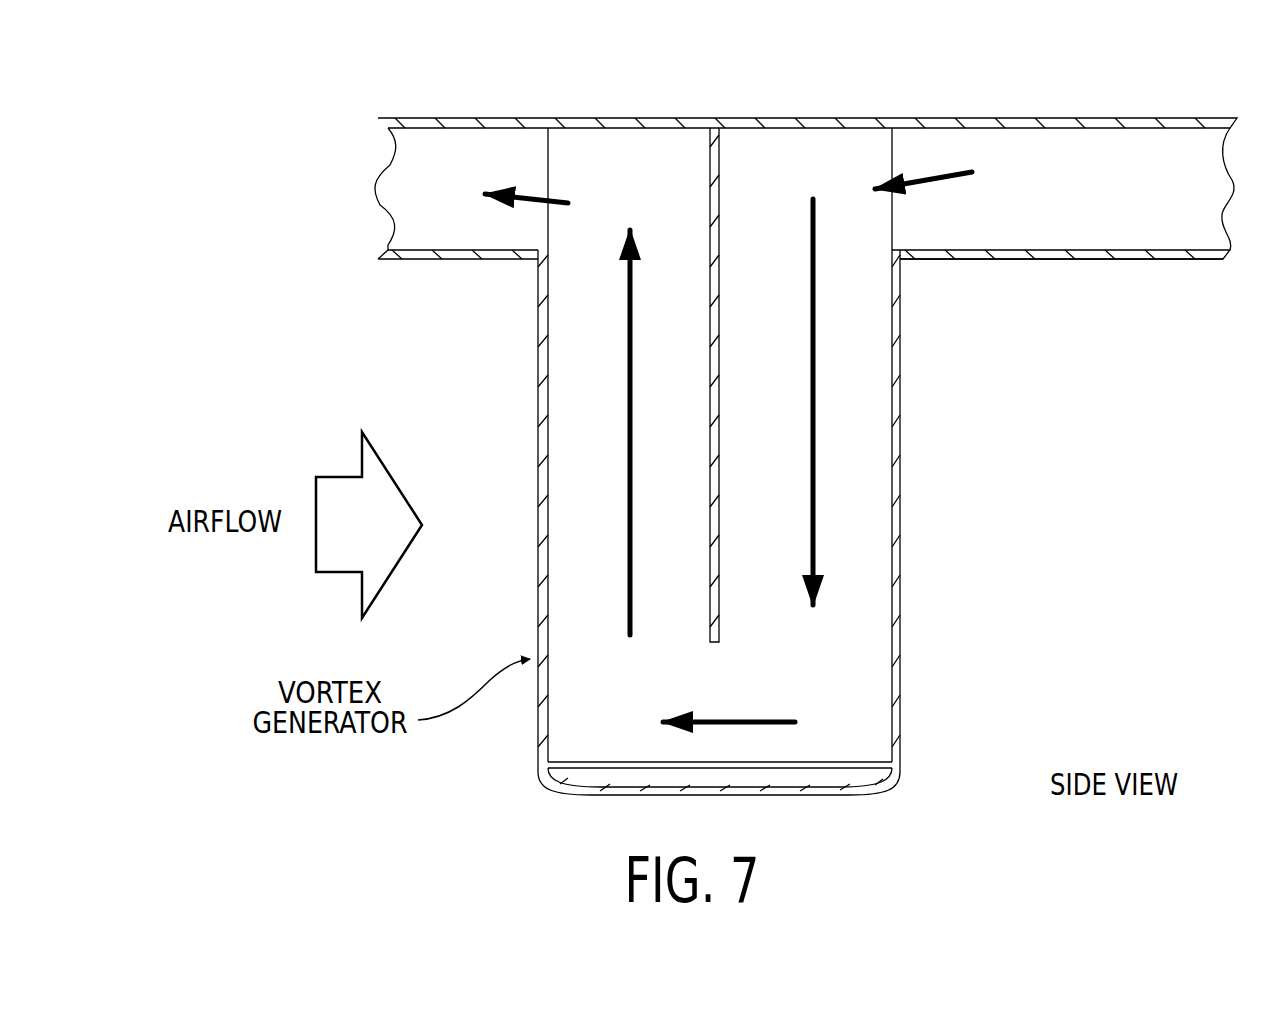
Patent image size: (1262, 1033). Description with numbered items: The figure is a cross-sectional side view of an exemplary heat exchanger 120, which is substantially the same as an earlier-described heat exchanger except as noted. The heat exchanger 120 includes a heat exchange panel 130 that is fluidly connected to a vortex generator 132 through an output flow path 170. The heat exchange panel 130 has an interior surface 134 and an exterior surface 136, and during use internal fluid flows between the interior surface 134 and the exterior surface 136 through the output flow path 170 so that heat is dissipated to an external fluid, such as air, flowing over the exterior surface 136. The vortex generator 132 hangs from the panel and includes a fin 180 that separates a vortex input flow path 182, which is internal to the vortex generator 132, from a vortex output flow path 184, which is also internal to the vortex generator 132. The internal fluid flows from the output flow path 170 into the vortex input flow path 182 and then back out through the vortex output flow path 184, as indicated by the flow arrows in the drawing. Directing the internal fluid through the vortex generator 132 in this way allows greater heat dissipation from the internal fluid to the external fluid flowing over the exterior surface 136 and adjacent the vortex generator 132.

The heat exchanger 120 is at (279, 170).
The output flow path 170 is at (1145, 145).
The interior surface 134 is at (985, 128).
The heat exchange panel 130 is at (1139, 272).
The exterior surface 136 is at (977, 261).
The vortex output flow path 184 is at (568, 400).
The vortex input flow path 182 is at (868, 609).
The vortex generator 132 is at (901, 712).
The fin 180 is at (722, 597).